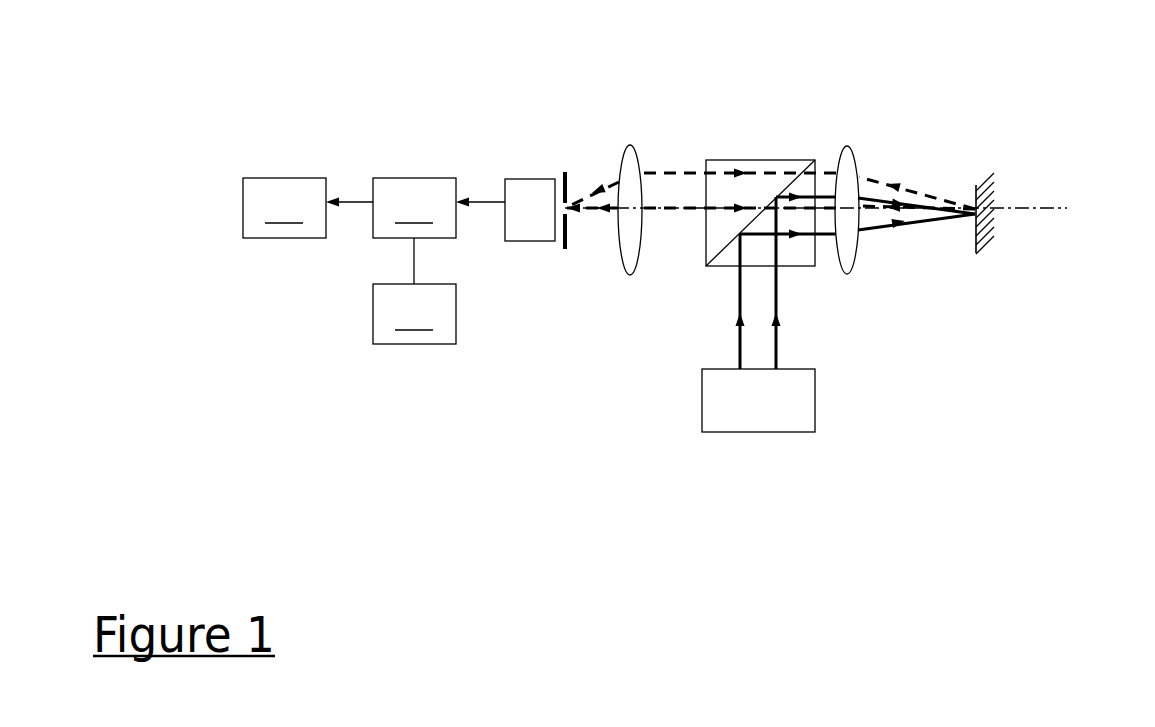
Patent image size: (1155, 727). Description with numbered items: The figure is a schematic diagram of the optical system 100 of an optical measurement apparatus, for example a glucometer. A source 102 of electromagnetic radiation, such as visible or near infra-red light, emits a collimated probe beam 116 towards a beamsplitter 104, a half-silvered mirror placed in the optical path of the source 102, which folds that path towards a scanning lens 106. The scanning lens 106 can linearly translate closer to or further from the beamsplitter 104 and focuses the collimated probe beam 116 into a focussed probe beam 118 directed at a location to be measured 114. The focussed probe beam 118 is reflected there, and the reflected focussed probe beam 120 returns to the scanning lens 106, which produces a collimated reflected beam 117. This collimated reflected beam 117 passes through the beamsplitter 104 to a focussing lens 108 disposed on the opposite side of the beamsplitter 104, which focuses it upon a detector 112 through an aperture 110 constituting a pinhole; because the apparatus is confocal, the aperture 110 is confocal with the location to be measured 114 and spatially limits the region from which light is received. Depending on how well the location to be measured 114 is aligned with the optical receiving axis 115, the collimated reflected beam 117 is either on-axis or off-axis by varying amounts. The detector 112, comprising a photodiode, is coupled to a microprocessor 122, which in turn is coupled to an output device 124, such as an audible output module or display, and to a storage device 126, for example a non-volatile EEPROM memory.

The optical system 100 is at (432, 483).
The source 102 is at (737, 438).
The beamsplitter 104 is at (706, 266).
The scanning lens 106 is at (855, 138).
The focussing lens 108 is at (632, 137).
The aperture 110 is at (558, 252).
The detector 112 is at (525, 167).
The location to be measured 114 is at (985, 268).
The optical receiving axis 115 is at (1057, 207).
The collimated probe beam 116 is at (777, 352).
The collimated reflected beam 117 is at (677, 173).
The focussed probe beam 118 is at (877, 232).
The reflected focussed probe beam 120 is at (883, 180).
The microprocessor 122 is at (439, 208).
The output device 124 is at (308, 208).
The storage device 126 is at (414, 291).